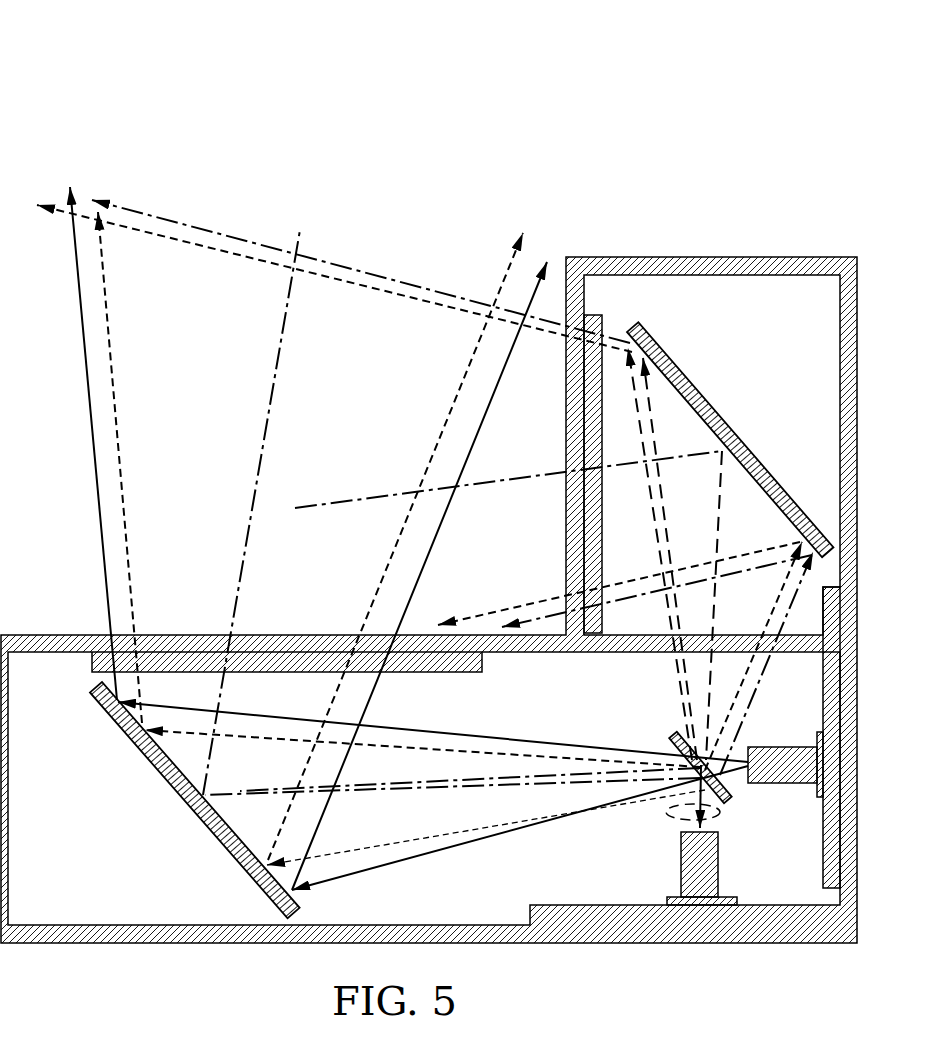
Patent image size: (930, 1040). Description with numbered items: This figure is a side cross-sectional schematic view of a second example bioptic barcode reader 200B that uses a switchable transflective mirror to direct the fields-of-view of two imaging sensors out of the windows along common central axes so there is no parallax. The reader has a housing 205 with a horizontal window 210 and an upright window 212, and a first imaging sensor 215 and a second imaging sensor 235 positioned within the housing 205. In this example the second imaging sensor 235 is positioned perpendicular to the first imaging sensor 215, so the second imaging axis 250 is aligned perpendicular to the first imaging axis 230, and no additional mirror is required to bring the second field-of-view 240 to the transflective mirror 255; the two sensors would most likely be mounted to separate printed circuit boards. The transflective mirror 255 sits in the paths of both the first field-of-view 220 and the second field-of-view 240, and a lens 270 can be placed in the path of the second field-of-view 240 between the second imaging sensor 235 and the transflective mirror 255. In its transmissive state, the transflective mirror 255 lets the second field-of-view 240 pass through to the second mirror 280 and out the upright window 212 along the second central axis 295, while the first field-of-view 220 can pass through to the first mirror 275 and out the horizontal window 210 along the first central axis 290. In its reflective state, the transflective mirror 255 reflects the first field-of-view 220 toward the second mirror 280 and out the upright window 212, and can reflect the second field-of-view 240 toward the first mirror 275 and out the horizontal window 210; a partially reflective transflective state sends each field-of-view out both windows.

The bioptic barcode reader 200B is at (148, 65).
The housing 205 is at (713, 257).
The horizontal window 210 is at (190, 635).
The upright window 212 is at (565, 545).
The first imaging sensor 215 is at (800, 745).
The first field-of-view 220 is at (215, 250).
The first imaging axis 230 is at (518, 774).
The second imaging sensor 235 is at (658, 892).
The second field-of-view 240 is at (367, 272).
The second imaging axis 250 is at (708, 690).
The transflective mirror 255 is at (672, 740).
The lens 270 is at (720, 813).
The first mirror 275 is at (192, 808).
The second mirror 280 is at (738, 440).
The first central axis 290 is at (275, 380).
The second central axis 295 is at (365, 497).